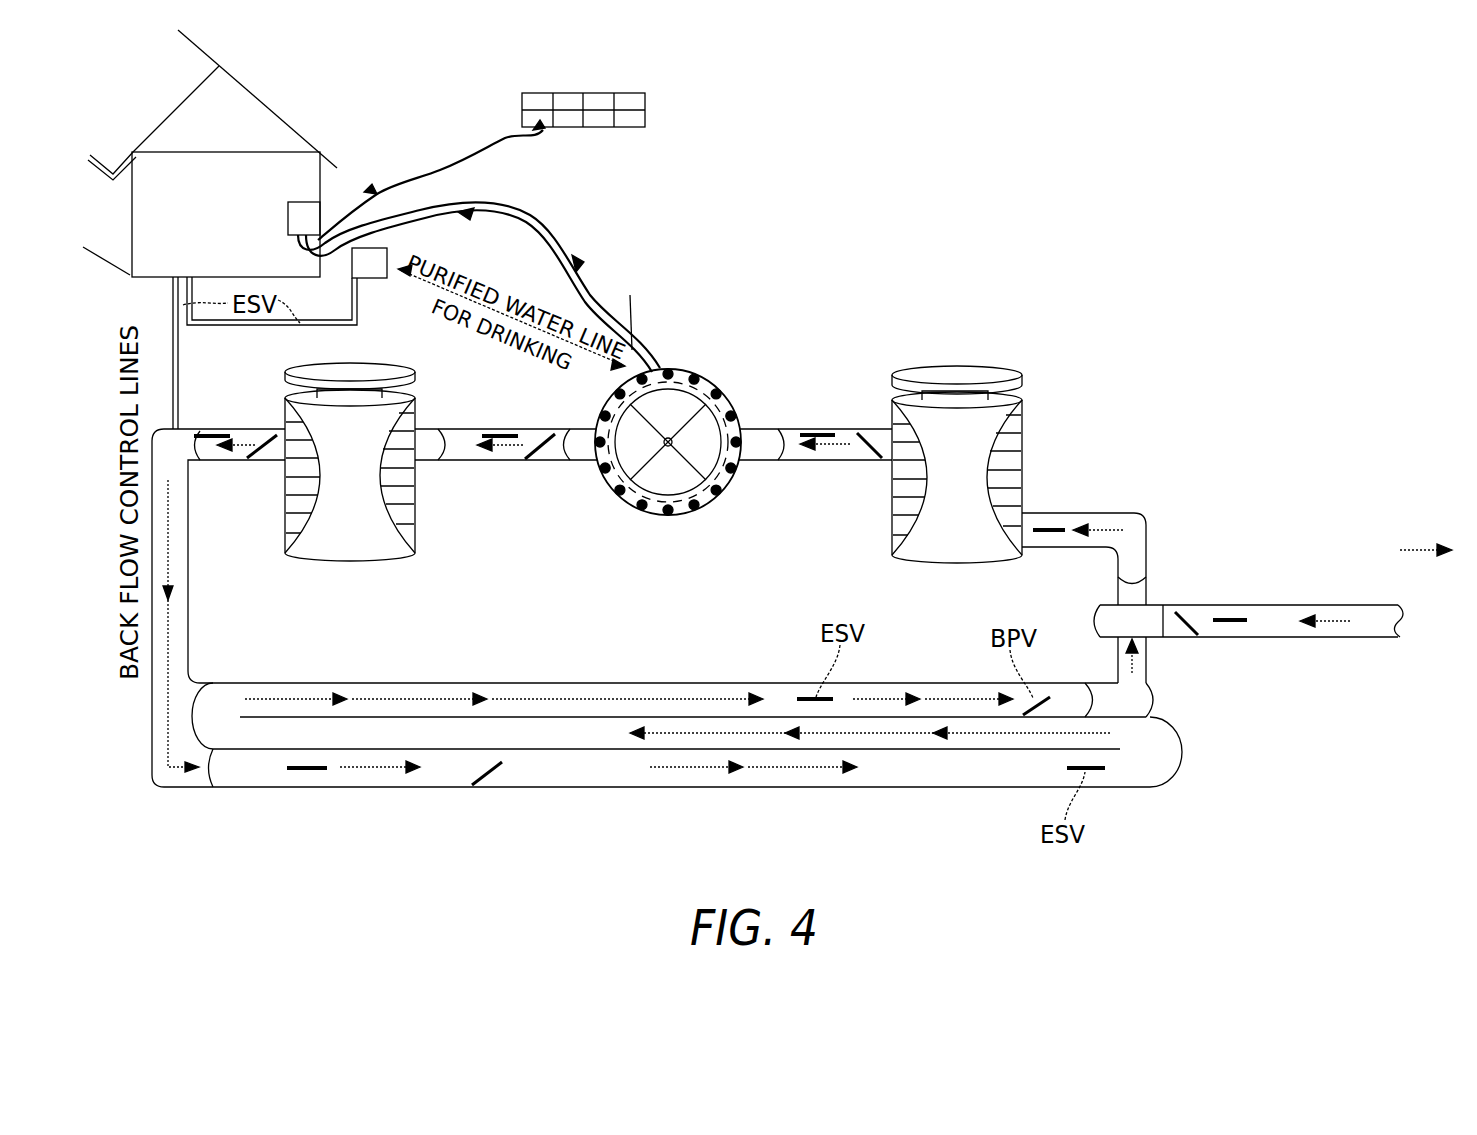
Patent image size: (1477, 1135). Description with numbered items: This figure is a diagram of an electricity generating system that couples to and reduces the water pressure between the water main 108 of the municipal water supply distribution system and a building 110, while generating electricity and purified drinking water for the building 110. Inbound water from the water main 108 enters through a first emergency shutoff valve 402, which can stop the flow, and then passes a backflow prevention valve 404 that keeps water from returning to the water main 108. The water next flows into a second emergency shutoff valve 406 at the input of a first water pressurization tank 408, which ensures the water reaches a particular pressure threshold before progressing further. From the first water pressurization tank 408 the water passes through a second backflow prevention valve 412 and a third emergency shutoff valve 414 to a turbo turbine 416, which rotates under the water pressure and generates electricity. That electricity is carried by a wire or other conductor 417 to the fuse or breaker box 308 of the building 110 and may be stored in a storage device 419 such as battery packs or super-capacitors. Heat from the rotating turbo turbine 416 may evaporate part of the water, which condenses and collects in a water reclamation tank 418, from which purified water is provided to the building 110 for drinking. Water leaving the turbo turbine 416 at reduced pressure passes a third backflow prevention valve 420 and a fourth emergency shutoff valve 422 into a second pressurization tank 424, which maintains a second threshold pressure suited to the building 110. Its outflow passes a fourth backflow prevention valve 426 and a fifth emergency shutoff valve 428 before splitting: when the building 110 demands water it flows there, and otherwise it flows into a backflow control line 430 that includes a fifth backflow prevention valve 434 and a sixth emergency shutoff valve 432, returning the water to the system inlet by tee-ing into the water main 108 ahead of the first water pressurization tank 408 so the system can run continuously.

The building 110 is at (240, 73).
The fuse or breaker box 308 is at (288, 207).
The water reclamation tank 418 is at (336, 228).
The storage device 419 is at (646, 116).
The wire or other conductor 417 is at (502, 208).
The turbo turbine 416 is at (666, 516).
The second pressurization tank 424 is at (372, 455).
The fifth emergency shutoff valve 428 is at (213, 436).
The fourth backflow prevention valve 426 is at (252, 460).
The fourth emergency shutoff valve 422 is at (488, 432).
The third backflow prevention valve 420 is at (537, 462).
The third emergency shutoff valve 414 is at (816, 433).
The second backflow prevention valve 412 is at (868, 460).
The first water pressurization tank 408 is at (985, 455).
The second emergency shutoff valve 406 is at (1048, 527).
The backflow prevention valve 404 is at (1190, 612).
The water main 108 is at (1330, 606).
The first emergency shutoff valve 402 is at (1228, 624).
The backflow control line 430 is at (200, 683).
The sixth emergency shutoff valve 432 is at (305, 772).
The fifth backflow prevention valve 434 is at (485, 786).